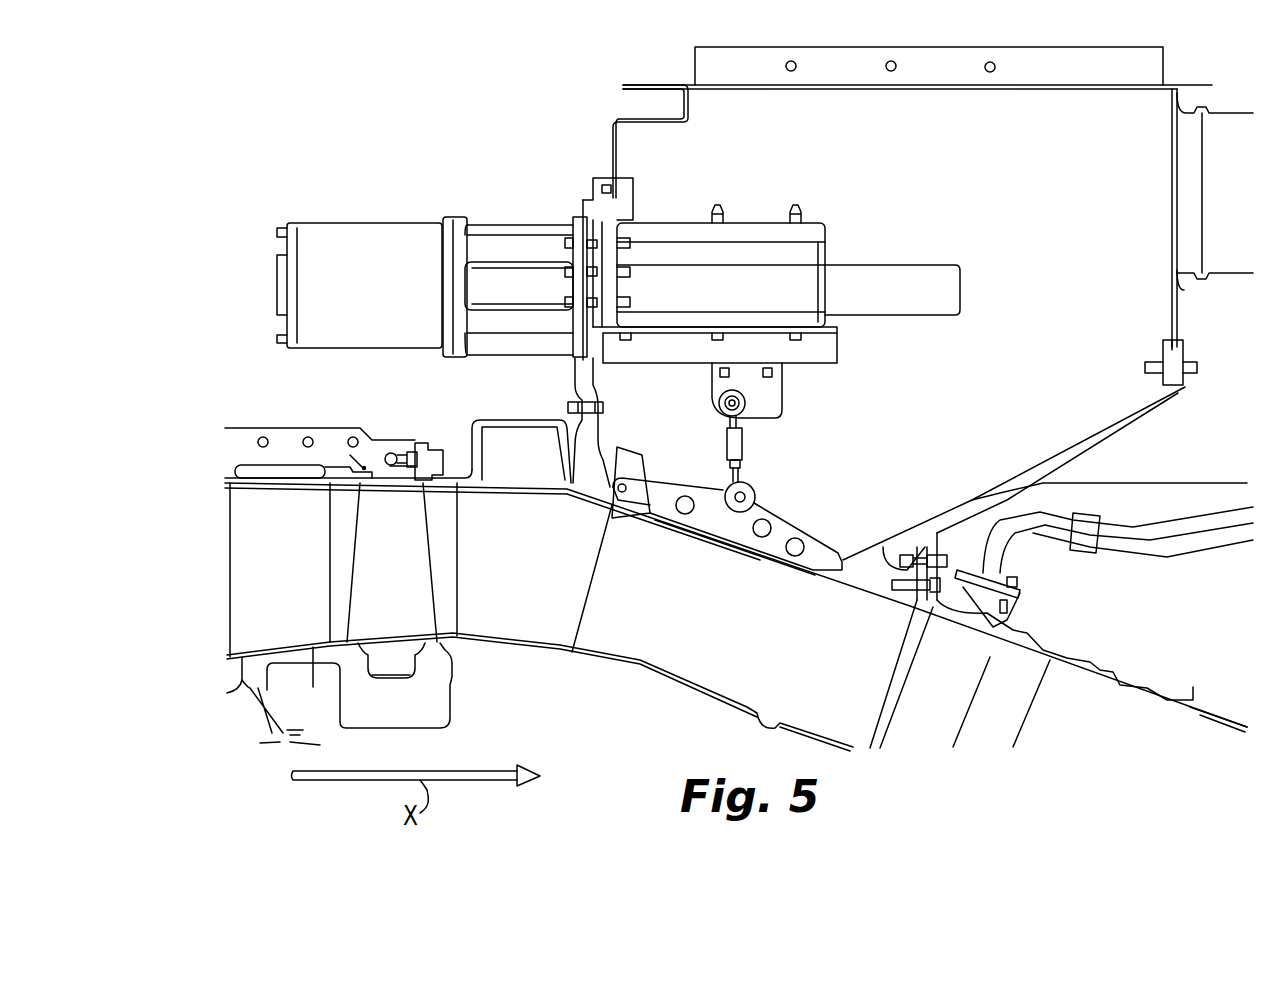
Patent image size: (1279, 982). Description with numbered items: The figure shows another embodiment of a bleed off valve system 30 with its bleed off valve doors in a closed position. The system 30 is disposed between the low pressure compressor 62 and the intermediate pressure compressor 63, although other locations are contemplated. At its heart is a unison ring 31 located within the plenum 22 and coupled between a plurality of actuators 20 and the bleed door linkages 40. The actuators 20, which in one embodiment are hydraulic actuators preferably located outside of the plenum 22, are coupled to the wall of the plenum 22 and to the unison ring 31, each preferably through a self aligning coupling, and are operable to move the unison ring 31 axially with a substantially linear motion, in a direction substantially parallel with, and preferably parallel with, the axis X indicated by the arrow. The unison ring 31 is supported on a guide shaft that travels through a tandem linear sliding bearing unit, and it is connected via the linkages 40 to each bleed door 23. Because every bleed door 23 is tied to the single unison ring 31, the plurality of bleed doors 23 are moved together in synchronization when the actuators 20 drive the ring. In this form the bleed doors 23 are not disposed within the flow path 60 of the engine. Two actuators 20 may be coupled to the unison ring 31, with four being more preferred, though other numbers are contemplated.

The actuator 20 is at (338, 240).
The plenum 22 is at (972, 176).
The bleed door 23 is at (783, 532).
The system 30 is at (470, 118).
The unison ring 31 is at (820, 348).
The bleed door linkage 40 is at (727, 448).
The flow path 60 is at (742, 636).
The low pressure compressor 62 is at (190, 633).
The intermediate pressure compressor 63 is at (1180, 738).